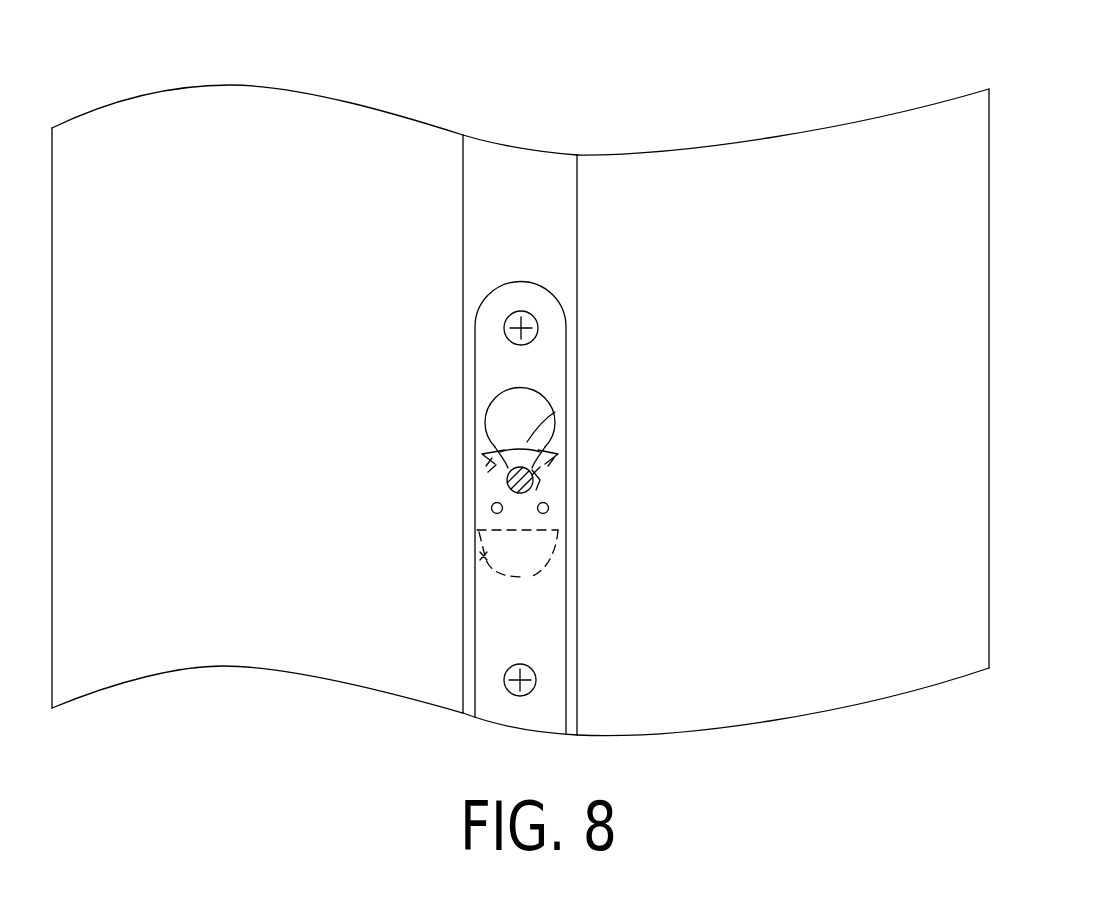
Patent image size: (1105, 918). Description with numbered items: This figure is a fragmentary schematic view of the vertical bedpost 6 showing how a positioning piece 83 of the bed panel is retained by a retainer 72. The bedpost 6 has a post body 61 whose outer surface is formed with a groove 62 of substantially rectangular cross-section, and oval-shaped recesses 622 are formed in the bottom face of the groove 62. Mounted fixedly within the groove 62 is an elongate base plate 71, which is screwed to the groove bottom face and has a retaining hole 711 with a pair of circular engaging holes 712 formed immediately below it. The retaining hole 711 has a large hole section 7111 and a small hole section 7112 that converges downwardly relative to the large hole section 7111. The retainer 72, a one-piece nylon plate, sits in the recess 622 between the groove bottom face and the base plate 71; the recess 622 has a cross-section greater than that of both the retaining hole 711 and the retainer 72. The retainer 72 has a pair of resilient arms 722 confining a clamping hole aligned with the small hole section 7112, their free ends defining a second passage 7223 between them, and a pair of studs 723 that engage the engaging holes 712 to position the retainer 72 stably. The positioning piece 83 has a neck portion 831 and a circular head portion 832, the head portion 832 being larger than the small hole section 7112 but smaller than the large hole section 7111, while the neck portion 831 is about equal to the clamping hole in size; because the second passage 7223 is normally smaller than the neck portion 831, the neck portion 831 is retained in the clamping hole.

The vertical bedpost 6 is at (797, 118).
The post body 61 is at (955, 210).
The groove 62 is at (526, 167).
The oval-shaped recess 622 is at (533, 577).
The elongate base plate 71 is at (548, 310).
The retaining hole 711 is at (518, 387).
The large hole section 7111 is at (503, 425).
The small hole section 7112 is at (540, 484).
The circular engaging hole 712 is at (500, 513).
The retainer 72 is at (408, 518).
The resilient arm 722 is at (500, 472).
The second passage 7223 is at (482, 440).
The stud 723 is at (537, 503).
The positioning piece 83 is at (609, 435).
The neck portion 831 is at (552, 460).
The head portion 832 is at (557, 408).